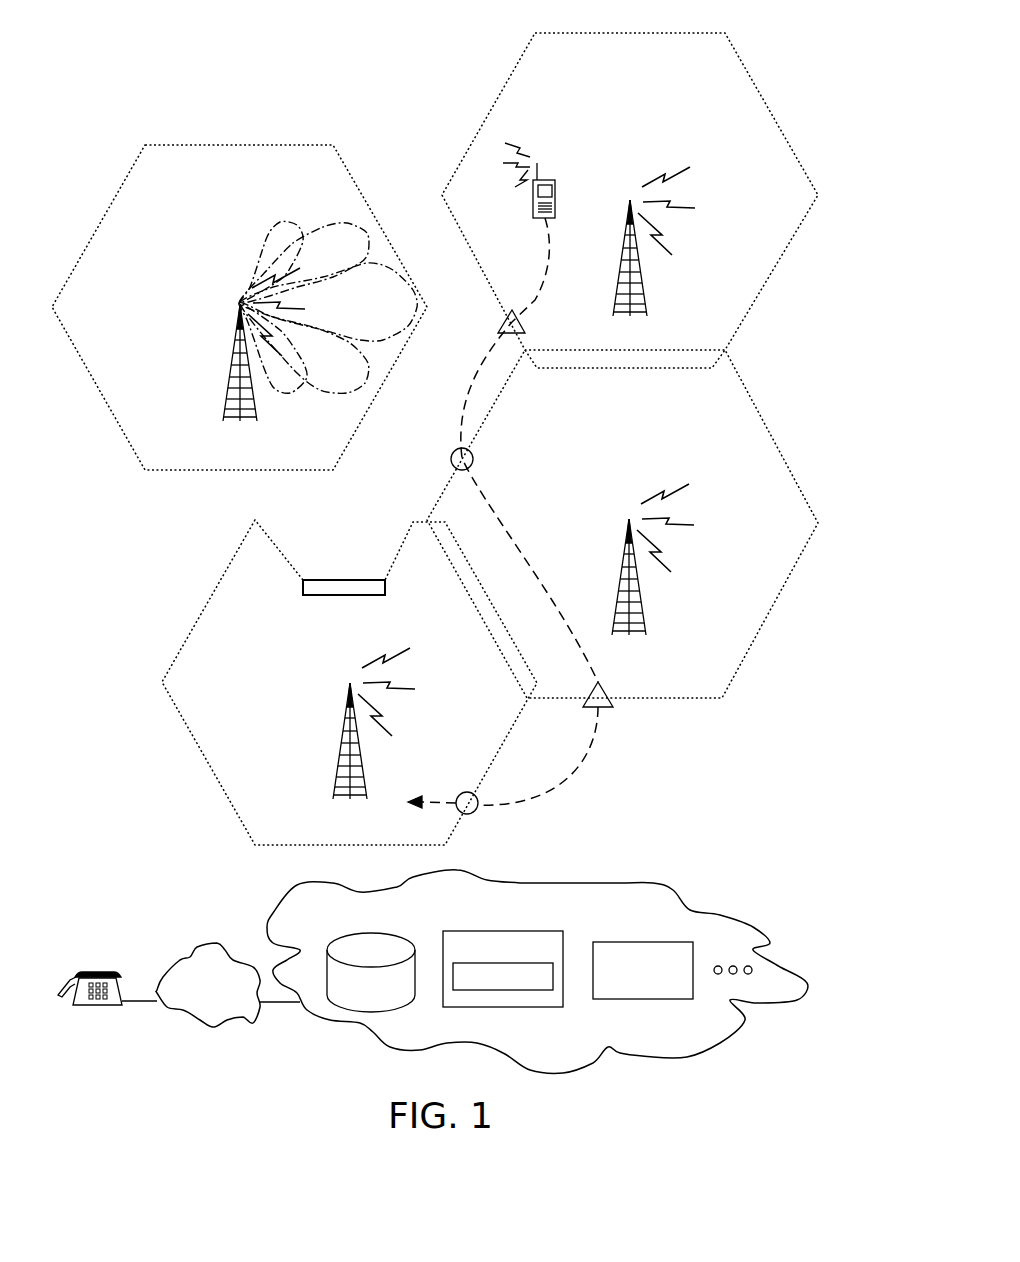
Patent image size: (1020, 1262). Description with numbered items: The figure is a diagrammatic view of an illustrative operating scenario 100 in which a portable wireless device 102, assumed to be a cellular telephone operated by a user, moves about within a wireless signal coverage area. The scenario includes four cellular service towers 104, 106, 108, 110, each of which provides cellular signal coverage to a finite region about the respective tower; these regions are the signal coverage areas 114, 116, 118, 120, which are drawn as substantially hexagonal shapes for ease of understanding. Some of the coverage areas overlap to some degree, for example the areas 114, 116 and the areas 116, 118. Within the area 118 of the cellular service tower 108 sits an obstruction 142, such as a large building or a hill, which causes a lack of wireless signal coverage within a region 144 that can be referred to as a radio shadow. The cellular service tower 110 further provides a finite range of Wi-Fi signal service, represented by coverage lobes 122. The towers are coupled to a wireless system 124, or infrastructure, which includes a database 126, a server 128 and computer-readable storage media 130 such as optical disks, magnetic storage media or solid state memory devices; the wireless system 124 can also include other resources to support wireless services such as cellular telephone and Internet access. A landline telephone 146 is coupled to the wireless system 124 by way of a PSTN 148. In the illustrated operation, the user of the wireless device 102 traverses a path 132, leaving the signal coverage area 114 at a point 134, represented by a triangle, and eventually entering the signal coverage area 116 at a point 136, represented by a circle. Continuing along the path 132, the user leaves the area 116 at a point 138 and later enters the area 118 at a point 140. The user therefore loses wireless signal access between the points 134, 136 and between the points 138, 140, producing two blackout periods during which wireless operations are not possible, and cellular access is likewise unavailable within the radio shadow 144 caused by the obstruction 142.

The operating scenario 100 is at (376, 33).
The wireless device 102 is at (556, 192).
The cellular service tower 104 is at (617, 297).
The cellular service tower 106 is at (620, 572).
The cellular service tower 108 is at (340, 729).
The cellular service tower 110 is at (232, 358).
The signal coverage area 114 is at (750, 82).
The signal coverage area 116 is at (765, 430).
The signal coverage area 118 is at (213, 773).
The signal coverage area 120 is at (120, 428).
The coverage lobes 122 is at (260, 254).
The wireless system 124 is at (657, 884).
The database 126 is at (381, 1003).
The server 128 is at (518, 1008).
The computer-readable storage media 130 is at (657, 1000).
The path 132 is at (492, 523).
The point 134 is at (499, 326).
The point 136 is at (451, 462).
The point 138 is at (609, 709).
The point 140 is at (471, 815).
The obstruction 142 is at (311, 597).
The region 144 is at (333, 523).
The landline telephone 146 is at (104, 1006).
The PSTN 148 is at (210, 1027).